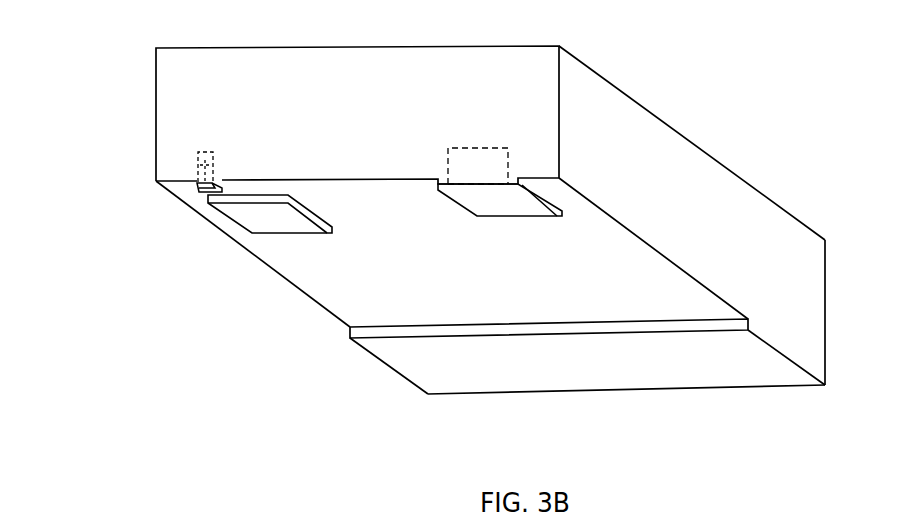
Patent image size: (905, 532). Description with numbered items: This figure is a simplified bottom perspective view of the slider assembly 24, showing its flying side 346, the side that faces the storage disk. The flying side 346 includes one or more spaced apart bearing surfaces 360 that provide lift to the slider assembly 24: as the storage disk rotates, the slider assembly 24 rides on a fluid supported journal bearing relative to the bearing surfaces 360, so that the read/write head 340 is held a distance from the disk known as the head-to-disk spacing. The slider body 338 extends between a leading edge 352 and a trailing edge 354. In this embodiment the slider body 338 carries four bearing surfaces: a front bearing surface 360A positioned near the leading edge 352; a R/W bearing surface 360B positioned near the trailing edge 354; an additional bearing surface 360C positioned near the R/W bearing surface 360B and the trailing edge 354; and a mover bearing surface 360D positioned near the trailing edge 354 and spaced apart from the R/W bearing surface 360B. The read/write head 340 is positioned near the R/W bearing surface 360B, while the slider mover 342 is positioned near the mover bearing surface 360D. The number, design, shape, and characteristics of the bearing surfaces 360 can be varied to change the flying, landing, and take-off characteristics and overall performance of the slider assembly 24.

The slider assembly 24 is at (817, 131).
The trailing edge 354 is at (185, 80).
The read/write head 340 is at (196, 167).
The R/W bearing surface 360B is at (198, 193).
The additional bearing surface 360C is at (255, 220).
The slider mover 342 is at (477, 158).
The mover bearing surface 360D is at (518, 203).
The slider body 338 is at (678, 178).
The flying side 346 is at (353, 278).
The front bearing surface 360A is at (640, 370).
The leading edge 352 is at (523, 396).
The bearing surfaces 360 is at (732, 370).